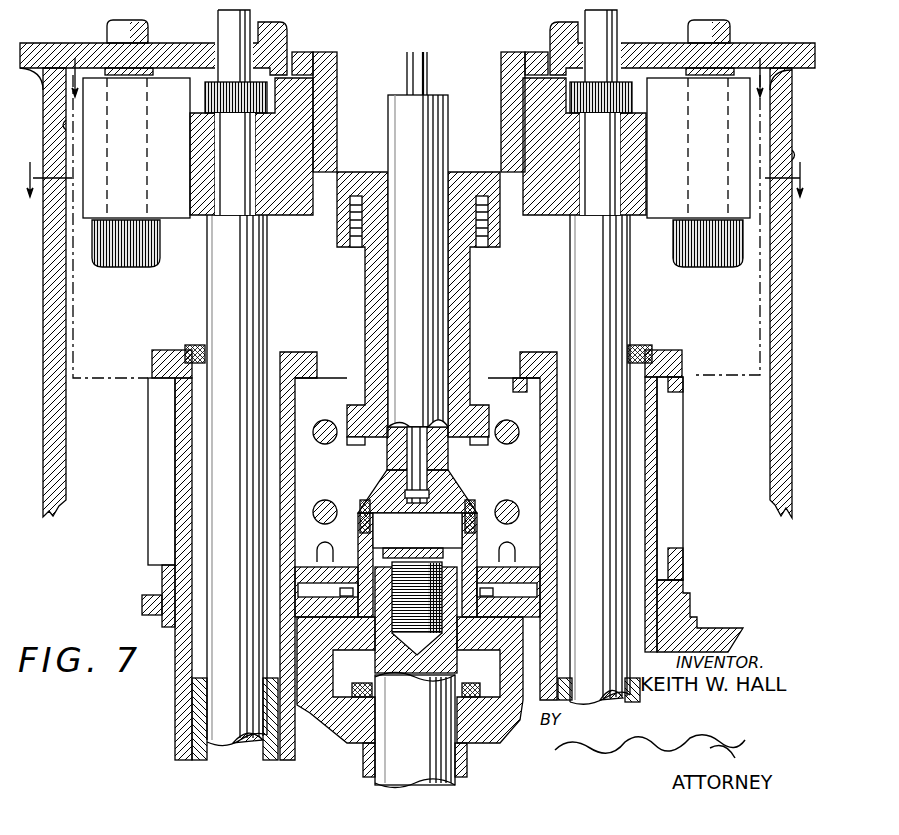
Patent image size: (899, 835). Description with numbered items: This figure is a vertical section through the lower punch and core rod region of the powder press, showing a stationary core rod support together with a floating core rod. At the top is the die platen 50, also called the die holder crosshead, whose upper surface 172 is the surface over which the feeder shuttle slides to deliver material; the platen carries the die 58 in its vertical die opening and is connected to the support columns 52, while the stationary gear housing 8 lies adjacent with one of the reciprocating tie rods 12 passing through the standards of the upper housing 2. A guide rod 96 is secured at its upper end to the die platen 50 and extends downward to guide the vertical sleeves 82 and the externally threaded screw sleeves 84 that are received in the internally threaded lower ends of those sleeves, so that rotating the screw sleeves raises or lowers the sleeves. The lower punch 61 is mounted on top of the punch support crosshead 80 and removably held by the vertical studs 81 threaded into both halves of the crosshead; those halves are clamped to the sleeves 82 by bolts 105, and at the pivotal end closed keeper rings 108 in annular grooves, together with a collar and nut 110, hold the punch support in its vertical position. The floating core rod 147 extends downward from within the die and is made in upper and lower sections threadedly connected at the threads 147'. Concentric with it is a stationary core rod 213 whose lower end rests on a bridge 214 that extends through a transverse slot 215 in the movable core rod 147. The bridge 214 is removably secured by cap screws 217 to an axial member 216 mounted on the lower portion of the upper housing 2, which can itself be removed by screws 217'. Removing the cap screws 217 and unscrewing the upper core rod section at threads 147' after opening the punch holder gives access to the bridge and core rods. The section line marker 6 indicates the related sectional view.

The upper housing 2 is at (788, 275).
The section line 6 is at (414, 179).
The stationary gear housing 8 is at (801, 43).
The tie rod 12 is at (416, 77).
The die platen 50 is at (305, 207).
The support column 52 is at (143, 40).
The die 58 is at (338, 115).
The lower punch 61 is at (470, 278).
The crosshead 80 is at (497, 383).
The stud 81 is at (356, 452).
The vertical sleeve 82 is at (183, 521).
The screw sleeve 84 is at (200, 716).
The rod 96 is at (216, 308).
The bolt 105 is at (326, 418).
The keeper ring 108 is at (684, 387).
The nut 110 is at (681, 363).
The floating core rod 147 is at (448, 441).
The threads 147' is at (380, 608).
The upper surface 172 is at (336, 52).
The stationary core rod 213 is at (428, 75).
The bridge 214 is at (440, 497).
The transverse slot 215 is at (440, 537).
The axial member 216 is at (360, 540).
The cap screw 217 is at (389, 505).
The screw 217' is at (430, 580).